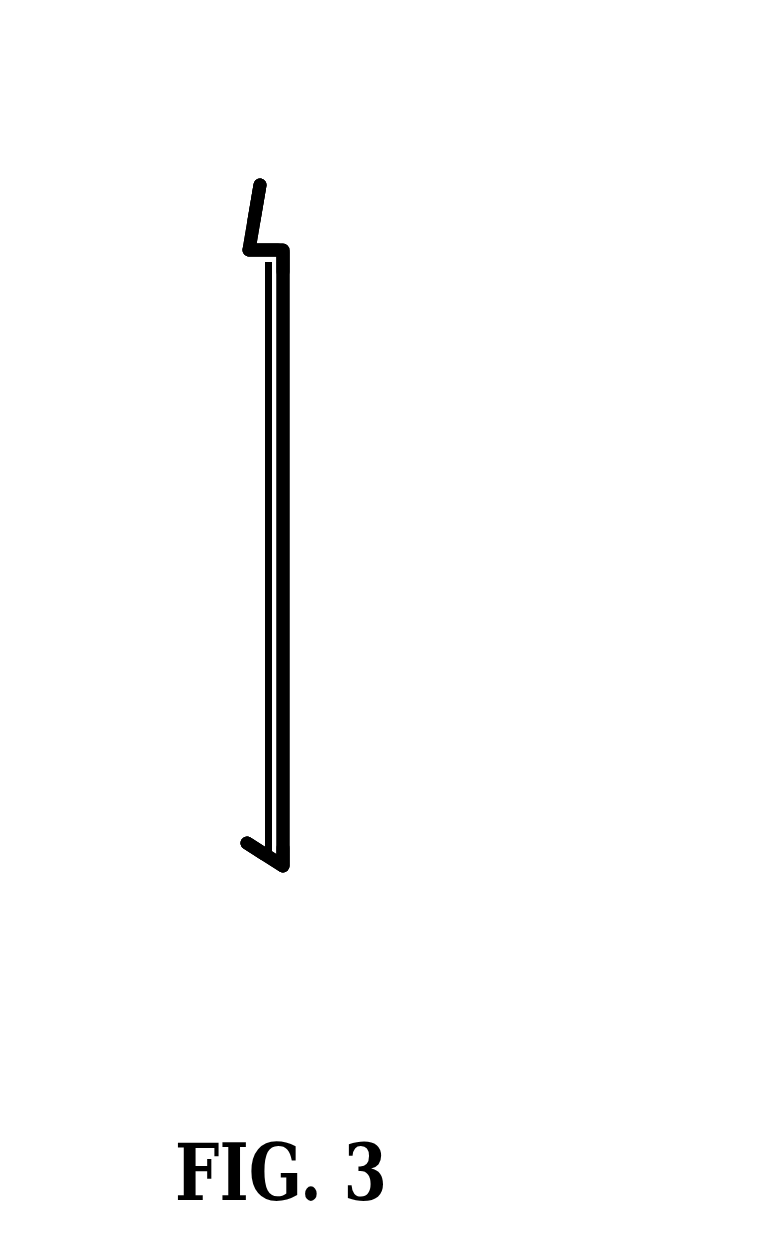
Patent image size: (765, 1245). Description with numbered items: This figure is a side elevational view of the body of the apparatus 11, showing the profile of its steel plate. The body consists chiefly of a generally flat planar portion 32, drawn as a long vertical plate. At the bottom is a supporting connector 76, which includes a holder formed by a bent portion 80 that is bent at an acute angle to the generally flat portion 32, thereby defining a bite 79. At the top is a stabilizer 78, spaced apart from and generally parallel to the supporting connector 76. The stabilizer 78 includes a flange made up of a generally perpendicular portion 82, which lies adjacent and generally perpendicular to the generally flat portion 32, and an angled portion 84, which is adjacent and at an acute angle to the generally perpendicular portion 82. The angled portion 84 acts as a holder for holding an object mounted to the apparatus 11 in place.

The apparatus 11 is at (377, 139).
The generally flat planar portion 32 is at (290, 548).
The supporting connector 76 is at (198, 852).
The stabilizer 78 is at (197, 240).
The bite 79 is at (260, 843).
The bent portion 80 is at (252, 857).
The generally perpendicular portion 82 is at (256, 257).
The angled portion 84 is at (246, 205).